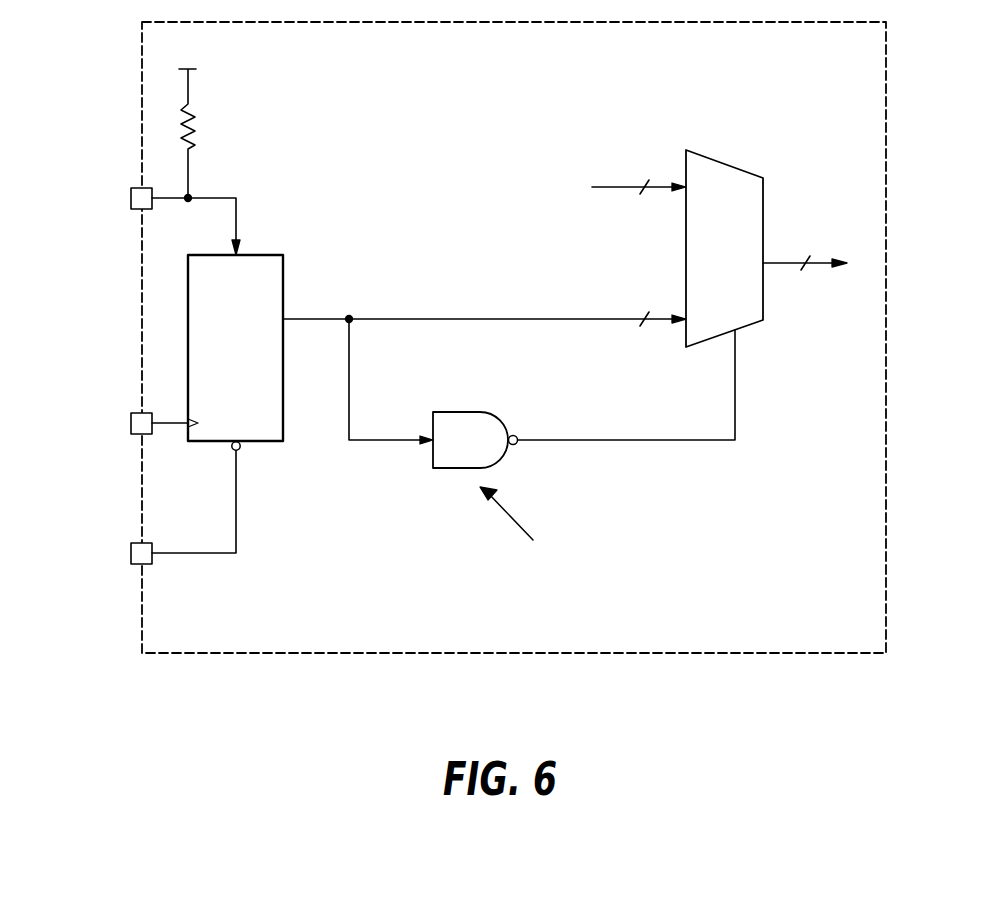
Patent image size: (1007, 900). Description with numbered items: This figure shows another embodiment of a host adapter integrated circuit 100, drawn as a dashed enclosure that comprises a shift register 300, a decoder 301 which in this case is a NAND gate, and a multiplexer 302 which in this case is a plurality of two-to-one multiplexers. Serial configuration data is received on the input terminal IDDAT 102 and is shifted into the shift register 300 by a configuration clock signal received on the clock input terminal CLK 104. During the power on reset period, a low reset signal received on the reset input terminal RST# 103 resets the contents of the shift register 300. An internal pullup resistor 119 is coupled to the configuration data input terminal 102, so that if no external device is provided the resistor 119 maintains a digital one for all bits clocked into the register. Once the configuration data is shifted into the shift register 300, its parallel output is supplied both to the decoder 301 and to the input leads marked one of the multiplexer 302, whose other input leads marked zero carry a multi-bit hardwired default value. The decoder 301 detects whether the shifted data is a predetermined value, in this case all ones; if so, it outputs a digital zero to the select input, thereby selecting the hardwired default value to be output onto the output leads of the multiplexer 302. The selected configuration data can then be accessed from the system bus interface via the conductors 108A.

The host adapter integrated circuit 100 is at (688, 654).
The configuration data input terminal IDDAT 102 is at (130, 198).
The reset input terminal RST# 103 is at (130, 553).
The clock input terminal CLK 104 is at (130, 423).
The internal pullup resistor 119 is at (196, 121).
The shift register 300 is at (283, 271).
The decoder 301 is at (472, 412).
The multiplexer 302 is at (734, 164).
The conductors 108A is at (810, 245).